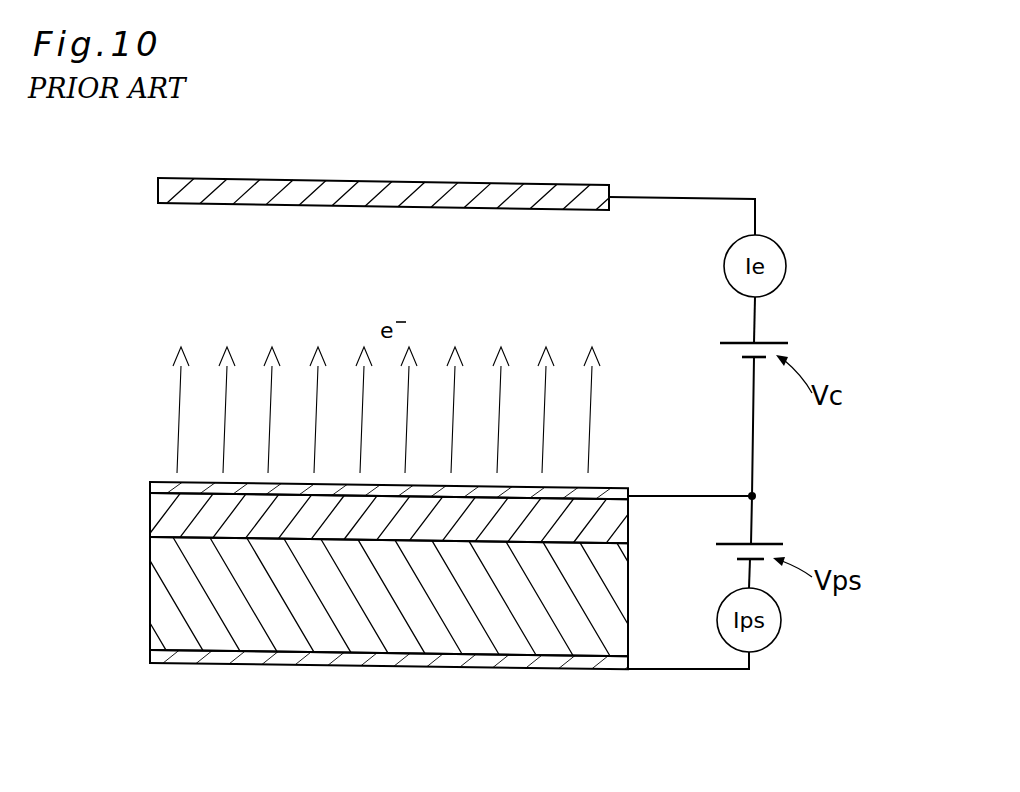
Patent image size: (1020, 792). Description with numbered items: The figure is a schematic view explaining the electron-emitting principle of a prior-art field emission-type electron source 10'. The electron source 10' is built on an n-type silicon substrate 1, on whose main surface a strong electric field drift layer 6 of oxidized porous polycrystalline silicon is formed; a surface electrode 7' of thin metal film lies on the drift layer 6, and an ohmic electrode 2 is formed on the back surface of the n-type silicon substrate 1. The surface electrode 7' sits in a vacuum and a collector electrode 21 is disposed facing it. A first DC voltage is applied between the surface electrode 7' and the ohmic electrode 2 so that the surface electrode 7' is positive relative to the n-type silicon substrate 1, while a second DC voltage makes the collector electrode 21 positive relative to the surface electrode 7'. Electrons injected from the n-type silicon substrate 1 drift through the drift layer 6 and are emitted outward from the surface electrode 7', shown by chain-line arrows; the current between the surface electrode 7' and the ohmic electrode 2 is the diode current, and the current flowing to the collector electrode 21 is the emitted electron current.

The collector electrode 21 is at (297, 191).
The surface electrode 7' is at (408, 462).
The strong electric field drift layer 6 is at (604, 524).
The n-type silicon substrate 1 is at (604, 608).
The ohmic electrode 2 is at (606, 672).
The field emission-type electron source 10' is at (374, 579).